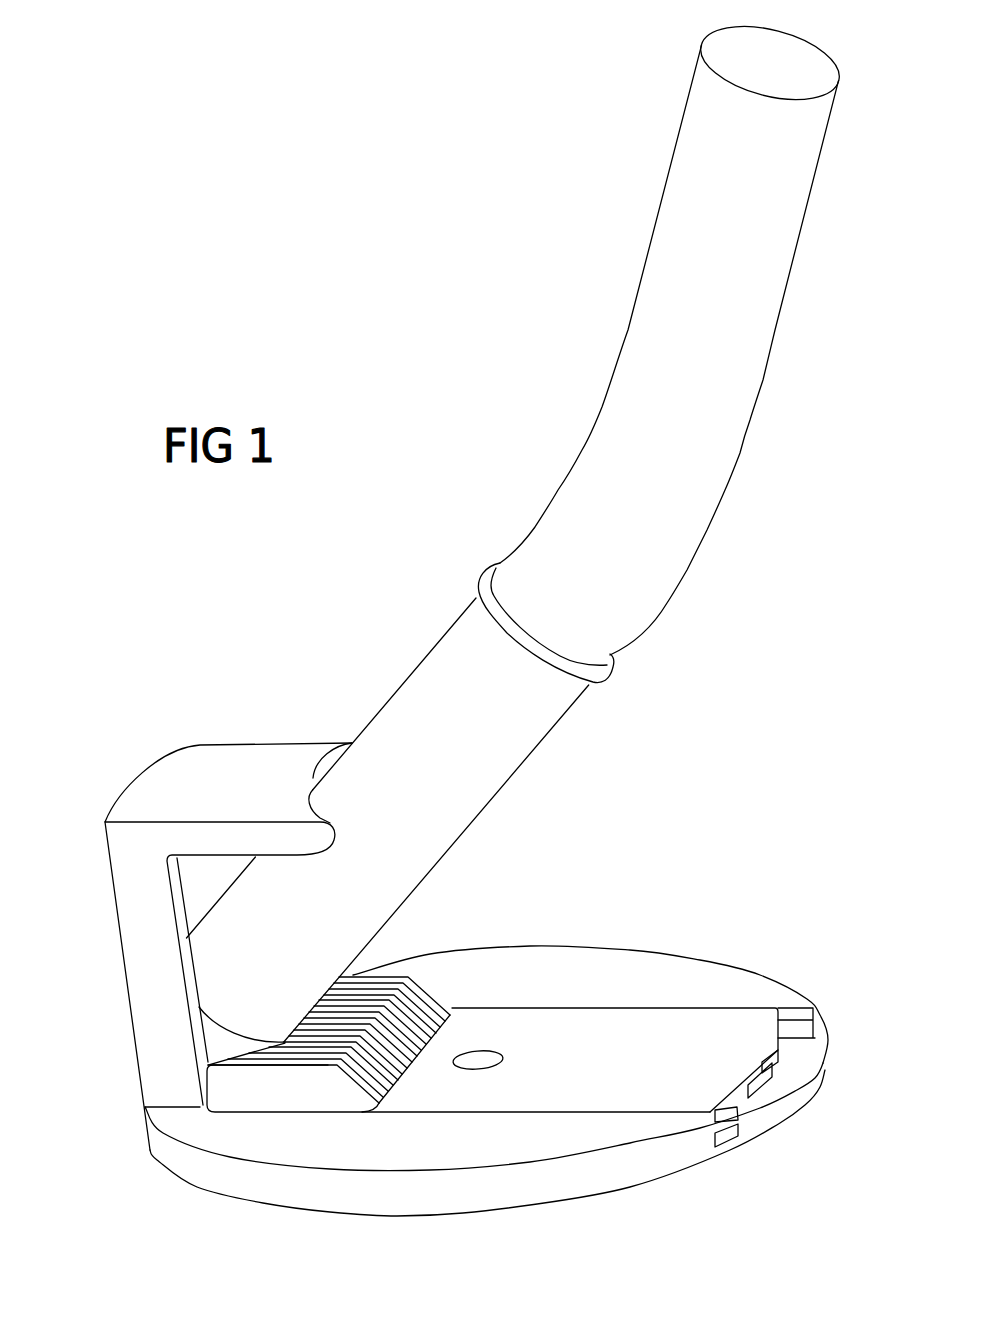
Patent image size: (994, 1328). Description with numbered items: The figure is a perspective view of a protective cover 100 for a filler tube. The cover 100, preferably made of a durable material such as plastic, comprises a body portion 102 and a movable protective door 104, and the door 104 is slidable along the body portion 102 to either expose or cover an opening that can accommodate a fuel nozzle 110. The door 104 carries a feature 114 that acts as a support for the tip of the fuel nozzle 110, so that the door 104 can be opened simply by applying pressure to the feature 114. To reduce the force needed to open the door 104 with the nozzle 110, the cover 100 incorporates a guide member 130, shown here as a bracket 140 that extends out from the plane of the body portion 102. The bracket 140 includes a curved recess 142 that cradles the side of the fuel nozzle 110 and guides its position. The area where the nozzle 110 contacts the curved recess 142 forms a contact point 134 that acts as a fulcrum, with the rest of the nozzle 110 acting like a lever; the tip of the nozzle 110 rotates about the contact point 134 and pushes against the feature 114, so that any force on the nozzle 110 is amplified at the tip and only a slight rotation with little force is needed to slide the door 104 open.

The cover 100 is at (160, 706).
The body portion 102 is at (642, 1160).
The door 104 is at (683, 1028).
The fuel nozzle 110 is at (735, 408).
The feature 114 is at (418, 972).
The guide member 130 is at (43, 833).
The contact point 134 is at (310, 795).
The bracket 140 is at (138, 873).
The curved recess 142 is at (320, 770).